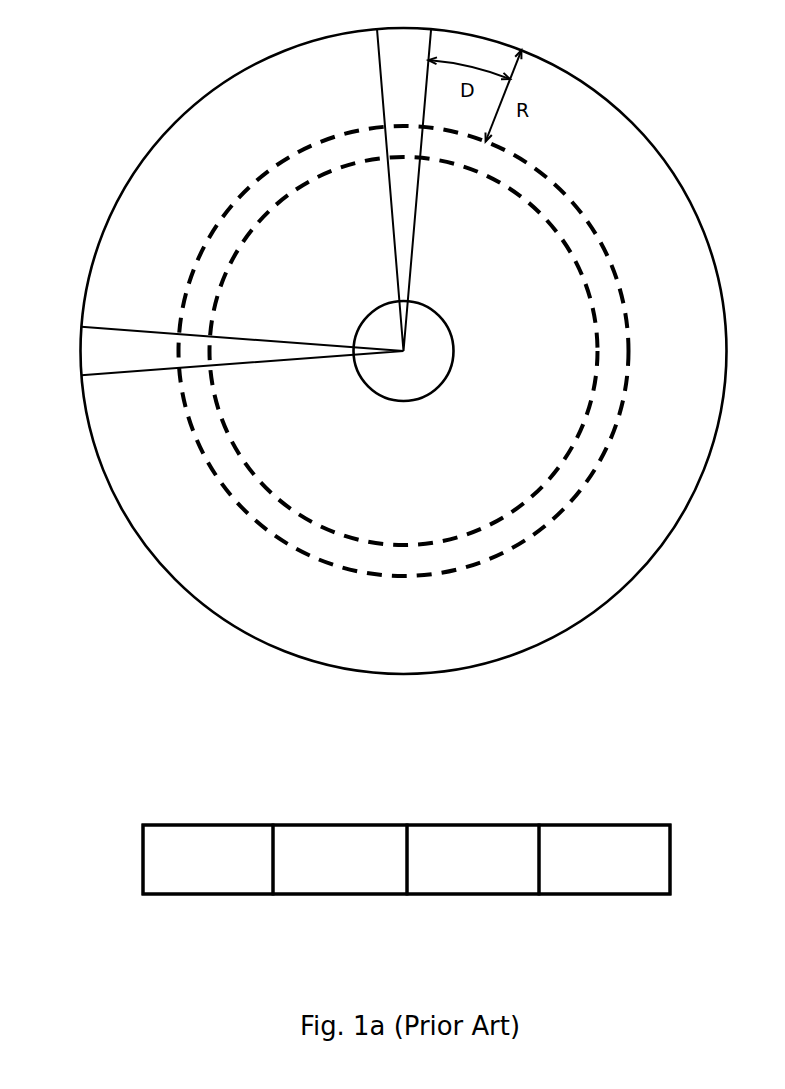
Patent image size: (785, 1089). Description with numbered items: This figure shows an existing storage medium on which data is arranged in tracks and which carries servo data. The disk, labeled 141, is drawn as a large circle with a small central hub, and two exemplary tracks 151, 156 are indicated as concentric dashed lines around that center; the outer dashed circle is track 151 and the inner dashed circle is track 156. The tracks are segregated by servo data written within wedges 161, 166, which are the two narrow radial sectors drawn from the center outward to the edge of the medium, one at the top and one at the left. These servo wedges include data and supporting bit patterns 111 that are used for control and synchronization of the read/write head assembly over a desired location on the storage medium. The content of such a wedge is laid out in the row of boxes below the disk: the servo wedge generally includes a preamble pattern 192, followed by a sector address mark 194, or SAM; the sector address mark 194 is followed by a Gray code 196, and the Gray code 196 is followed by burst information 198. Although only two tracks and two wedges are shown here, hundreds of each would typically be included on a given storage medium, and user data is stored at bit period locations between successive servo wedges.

The supporting bit patterns 111 is at (522, 799).
The disk 141 is at (626, 113).
The track 151 is at (550, 178).
The track 156 is at (560, 235).
The wedge 161 is at (402, 34).
The wedge 166 is at (87, 357).
The preamble pattern 192 is at (190, 886).
The sector address mark 194 is at (322, 886).
The Gray code 196 is at (455, 886).
The burst information 198 is at (587, 886).